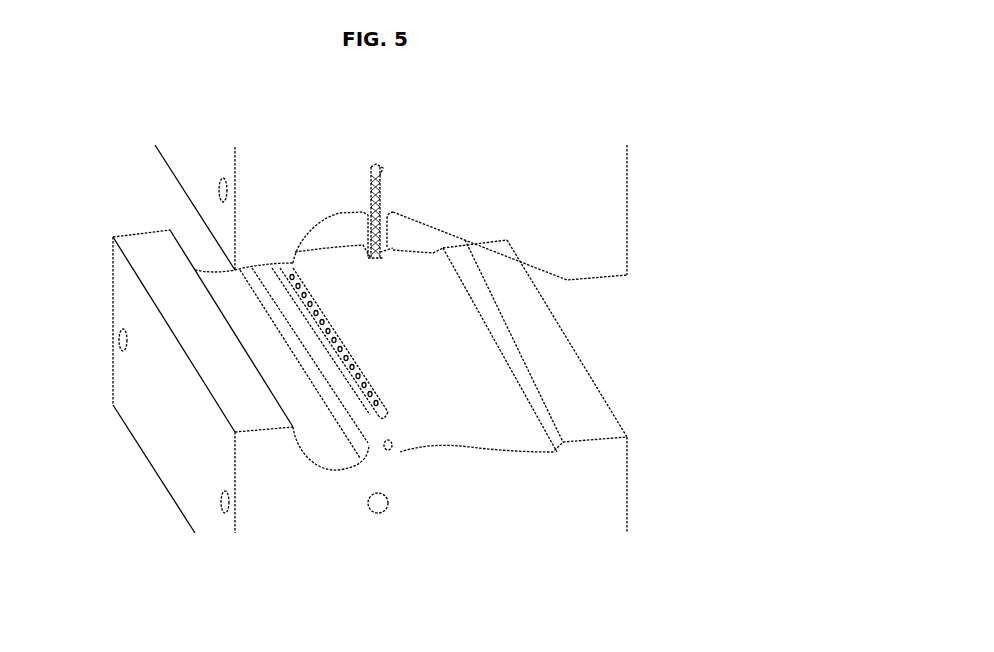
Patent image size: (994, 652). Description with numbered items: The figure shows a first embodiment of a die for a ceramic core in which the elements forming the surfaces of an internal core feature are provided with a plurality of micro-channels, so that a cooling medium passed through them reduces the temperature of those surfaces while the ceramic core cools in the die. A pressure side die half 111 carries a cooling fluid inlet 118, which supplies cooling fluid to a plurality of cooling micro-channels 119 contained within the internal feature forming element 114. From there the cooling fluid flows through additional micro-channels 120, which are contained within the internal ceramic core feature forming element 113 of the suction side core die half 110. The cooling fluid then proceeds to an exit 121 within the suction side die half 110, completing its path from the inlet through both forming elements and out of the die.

The suction side core die half 110 is at (553, 202).
The pressure side die half 111 is at (598, 478).
The internal ceramic core feature forming element 113 is at (363, 228).
The internal feature forming element 114 is at (380, 437).
The cooling fluid inlet 118 is at (380, 515).
The cooling micro-channels 119 is at (383, 420).
The additional micro-channels 120 is at (385, 251).
The exit 121 is at (384, 169).